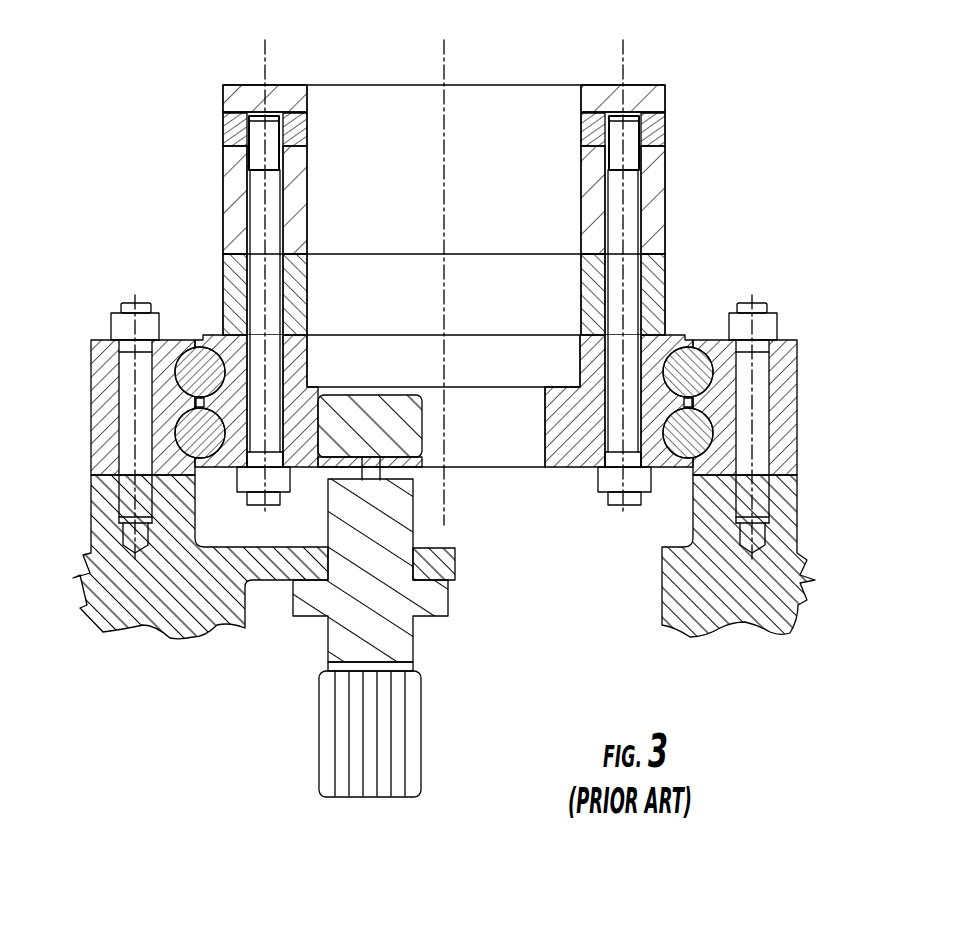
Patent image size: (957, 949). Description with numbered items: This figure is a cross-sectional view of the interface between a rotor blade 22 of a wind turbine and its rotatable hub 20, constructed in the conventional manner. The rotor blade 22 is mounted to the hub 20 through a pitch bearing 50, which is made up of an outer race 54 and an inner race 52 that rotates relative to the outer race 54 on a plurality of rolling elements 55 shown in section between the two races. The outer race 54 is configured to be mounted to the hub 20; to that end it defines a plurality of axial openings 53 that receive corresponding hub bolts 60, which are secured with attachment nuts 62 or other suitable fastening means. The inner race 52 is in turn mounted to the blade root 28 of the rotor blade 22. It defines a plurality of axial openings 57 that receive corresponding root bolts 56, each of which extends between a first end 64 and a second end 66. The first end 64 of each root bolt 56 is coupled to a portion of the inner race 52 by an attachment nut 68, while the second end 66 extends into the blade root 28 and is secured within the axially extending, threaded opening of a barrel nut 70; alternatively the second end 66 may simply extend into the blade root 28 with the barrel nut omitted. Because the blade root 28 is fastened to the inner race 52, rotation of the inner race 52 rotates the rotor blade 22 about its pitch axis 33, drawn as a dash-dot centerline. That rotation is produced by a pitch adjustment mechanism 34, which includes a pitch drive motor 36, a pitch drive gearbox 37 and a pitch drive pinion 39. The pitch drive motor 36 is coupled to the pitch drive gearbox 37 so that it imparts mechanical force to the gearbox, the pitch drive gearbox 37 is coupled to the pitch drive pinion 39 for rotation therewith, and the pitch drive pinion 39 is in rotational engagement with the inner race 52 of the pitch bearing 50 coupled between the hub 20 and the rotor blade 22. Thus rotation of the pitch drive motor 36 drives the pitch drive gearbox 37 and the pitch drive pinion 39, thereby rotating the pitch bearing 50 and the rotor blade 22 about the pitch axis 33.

The hub 20 is at (797, 524).
The rotor blade 22 is at (434, 210).
The blade root 28 is at (223, 157).
The pitch axis 33 is at (445, 156).
The pitch adjustment mechanism 34 is at (452, 598).
The pitch drive motor 36 is at (421, 735).
The pitch drive gearbox 37 is at (413, 640).
The pitch drive pinion 39 is at (422, 440).
The pitch bearing 50 is at (448, 402).
The inner race 52 is at (228, 350).
The axial openings 53 is at (438, 416).
The outer race 54 is at (91, 392).
The rolling elements 55 is at (215, 458).
The root bolts 56 is at (262, 232).
The axial openings 57 is at (285, 373).
The hub bolts 60 is at (416, 402).
The attachment nuts 62 is at (111, 328).
The first end 64 is at (265, 508).
The second end 66 is at (397, 274).
The attachment nut 68 is at (290, 478).
The barrel nut 70 is at (307, 135).